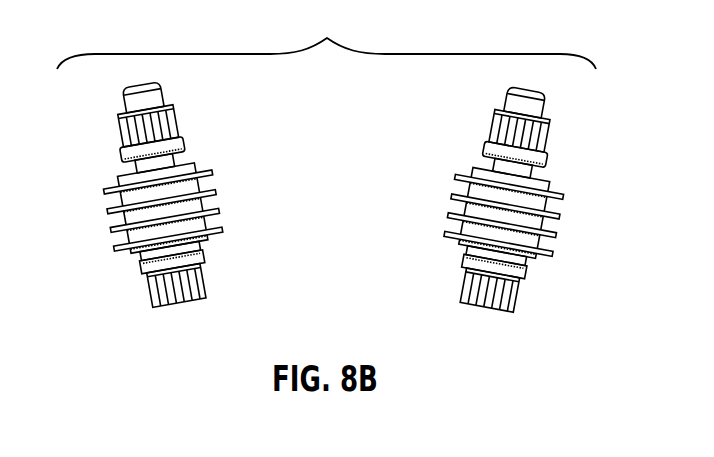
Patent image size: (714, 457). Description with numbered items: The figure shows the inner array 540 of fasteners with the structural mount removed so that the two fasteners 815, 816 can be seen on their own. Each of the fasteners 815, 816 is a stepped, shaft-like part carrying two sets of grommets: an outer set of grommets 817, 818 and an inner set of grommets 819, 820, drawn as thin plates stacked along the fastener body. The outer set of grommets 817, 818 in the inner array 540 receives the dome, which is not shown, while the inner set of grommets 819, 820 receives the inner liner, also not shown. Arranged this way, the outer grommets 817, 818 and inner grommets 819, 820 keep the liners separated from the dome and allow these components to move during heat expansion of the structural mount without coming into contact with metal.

The inner array 540 is at (326, 36).
The fastener 815 is at (150, 288).
The fastener 816 is at (522, 292).
The outer grommet 817 is at (119, 196).
The outer grommet 818 is at (556, 210).
The inner grommet 819 is at (222, 232).
The inner grommet 820 is at (445, 222).